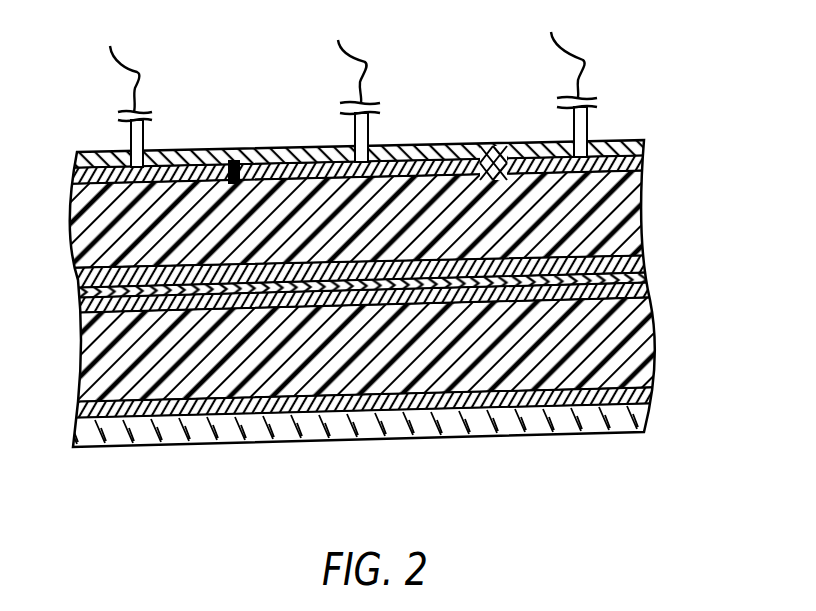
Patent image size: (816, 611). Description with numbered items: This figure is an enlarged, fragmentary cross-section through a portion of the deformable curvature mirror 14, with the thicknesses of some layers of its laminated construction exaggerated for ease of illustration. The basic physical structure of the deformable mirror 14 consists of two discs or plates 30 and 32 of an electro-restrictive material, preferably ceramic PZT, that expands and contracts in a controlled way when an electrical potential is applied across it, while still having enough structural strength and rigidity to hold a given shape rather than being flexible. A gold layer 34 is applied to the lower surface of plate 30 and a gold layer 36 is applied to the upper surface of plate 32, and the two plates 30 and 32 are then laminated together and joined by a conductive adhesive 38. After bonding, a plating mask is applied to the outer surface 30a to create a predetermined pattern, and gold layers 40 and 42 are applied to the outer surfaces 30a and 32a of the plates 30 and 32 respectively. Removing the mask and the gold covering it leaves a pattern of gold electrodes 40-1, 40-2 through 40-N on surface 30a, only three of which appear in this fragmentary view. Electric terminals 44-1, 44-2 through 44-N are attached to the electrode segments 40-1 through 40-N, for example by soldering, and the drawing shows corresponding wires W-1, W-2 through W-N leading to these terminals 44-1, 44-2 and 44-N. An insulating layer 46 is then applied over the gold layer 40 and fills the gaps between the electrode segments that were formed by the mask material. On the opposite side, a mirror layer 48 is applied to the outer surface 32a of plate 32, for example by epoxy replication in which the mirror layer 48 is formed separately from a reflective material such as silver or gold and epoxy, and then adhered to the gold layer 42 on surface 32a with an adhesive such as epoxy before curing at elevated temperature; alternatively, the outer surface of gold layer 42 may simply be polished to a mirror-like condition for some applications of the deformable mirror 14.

The deformable curvature mirror 14 is at (151, 461).
The plate 30 is at (644, 207).
The outer surface of plate 30 30a is at (490, 157).
The plate 32 is at (656, 366).
The outer surface of plate 32 32a is at (547, 404).
The gold layer 34 is at (647, 254).
The gold layer 36 is at (653, 291).
The conductive adhesive 38 is at (650, 277).
The gold layer 40 is at (644, 157).
The gold electrode 40-1 is at (614, 157).
The gold electrode 40-2 is at (268, 151).
The gold electrode 40-N is at (177, 167).
The gold layer 42 is at (650, 395).
The electric terminal 44-1 is at (587, 120).
The electric terminal 44-2 is at (372, 127).
The electric terminal 44-N is at (125, 137).
The insulating layer 46 is at (644, 143).
The mirror layer 48 is at (647, 417).
The first bonding wire W-1 is at (562, 60).
The second bonding wire W-2 is at (345, 64).
The Nth bonding wire W-N is at (117, 71).